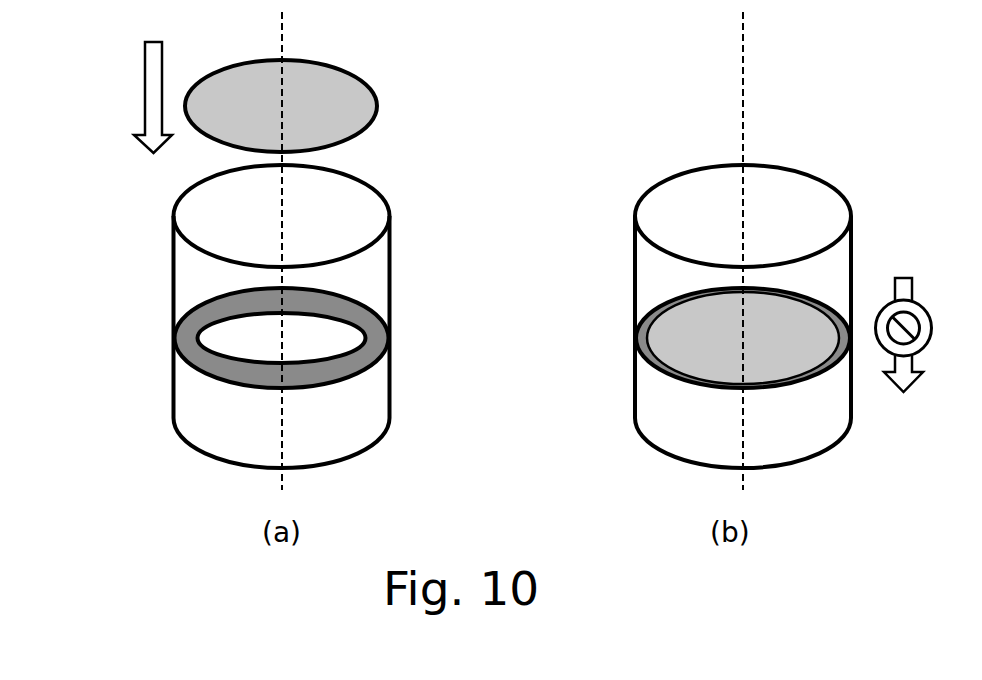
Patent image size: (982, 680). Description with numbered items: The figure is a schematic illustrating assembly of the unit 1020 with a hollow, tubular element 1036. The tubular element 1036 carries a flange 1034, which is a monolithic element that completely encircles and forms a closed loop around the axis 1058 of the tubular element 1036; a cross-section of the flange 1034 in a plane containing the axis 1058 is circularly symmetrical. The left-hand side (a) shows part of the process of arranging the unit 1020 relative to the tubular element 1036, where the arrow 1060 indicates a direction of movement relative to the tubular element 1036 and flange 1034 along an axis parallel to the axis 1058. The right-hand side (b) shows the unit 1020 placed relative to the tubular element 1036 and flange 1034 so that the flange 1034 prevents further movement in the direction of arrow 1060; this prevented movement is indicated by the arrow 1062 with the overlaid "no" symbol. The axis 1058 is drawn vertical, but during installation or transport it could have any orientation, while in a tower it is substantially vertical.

The unit 1020 is at (722, 333).
The flange 1034 is at (343, 312).
The hollow, tubular element 1036 is at (355, 387).
The axis 1058 is at (743, 48).
The arrow 1060 is at (148, 73).
The arrow with overlaid "no" symbol 1062 is at (903, 278).